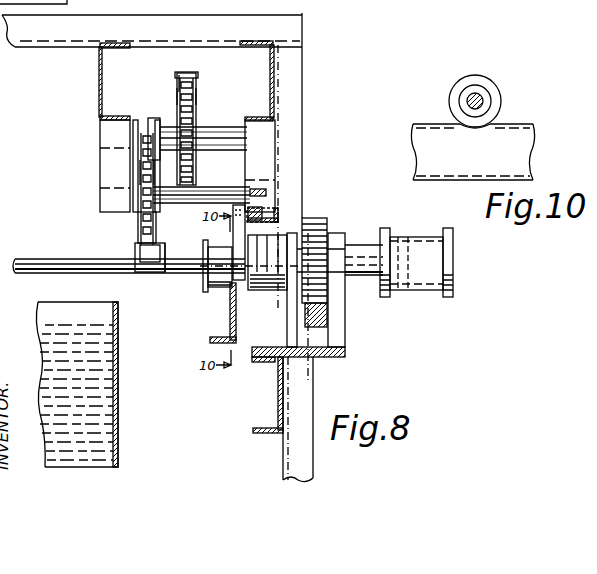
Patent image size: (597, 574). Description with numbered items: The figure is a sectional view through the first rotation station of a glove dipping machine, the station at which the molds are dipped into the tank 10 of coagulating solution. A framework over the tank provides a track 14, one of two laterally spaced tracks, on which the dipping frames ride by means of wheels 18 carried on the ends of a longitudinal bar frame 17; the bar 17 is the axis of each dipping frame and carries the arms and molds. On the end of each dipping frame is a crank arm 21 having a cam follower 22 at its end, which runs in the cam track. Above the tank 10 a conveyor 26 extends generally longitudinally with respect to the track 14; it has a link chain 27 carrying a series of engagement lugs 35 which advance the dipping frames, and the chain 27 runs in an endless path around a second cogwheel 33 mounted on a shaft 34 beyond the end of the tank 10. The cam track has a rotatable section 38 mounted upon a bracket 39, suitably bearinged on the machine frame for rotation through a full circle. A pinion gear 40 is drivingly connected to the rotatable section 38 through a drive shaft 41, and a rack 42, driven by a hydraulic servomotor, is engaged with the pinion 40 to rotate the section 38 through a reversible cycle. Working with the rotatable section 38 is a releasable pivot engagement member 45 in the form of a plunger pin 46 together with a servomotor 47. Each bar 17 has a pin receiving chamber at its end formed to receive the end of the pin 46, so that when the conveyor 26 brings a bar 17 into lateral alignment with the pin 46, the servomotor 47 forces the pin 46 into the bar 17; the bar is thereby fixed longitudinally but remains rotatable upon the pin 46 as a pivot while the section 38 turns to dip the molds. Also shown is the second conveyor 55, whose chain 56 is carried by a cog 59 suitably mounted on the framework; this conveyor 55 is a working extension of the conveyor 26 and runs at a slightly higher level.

In FIG. 8, the tank 10 is at (119, 355).
In FIG. 8, the track 14 is at (218, 288).
In FIG. 10, the track 14 is at (518, 122).
In FIG. 8, the longitudinal bar frame 17 is at (87, 261).
In FIG. 8, the wheel 18 is at (214, 244).
In FIG. 10, the wheel 18 is at (498, 93).
In FIG. 8, the crank arm 21 is at (240, 235).
In FIG. 8, the cam follower 22 is at (262, 214).
In FIG. 8, the conveyor 26 is at (142, 222).
In FIG. 8, the link chain 27 is at (148, 132).
In FIG. 8, the second cogwheel 33 is at (142, 173).
In FIG. 8, the shaft 34 is at (172, 212).
In FIG. 8, the engagement lug 35 is at (150, 270).
In FIG. 8, the rotatable section 38 is at (266, 194).
In FIG. 8, the bracket 39 is at (270, 292).
In FIG. 8, the pinion gear 40 is at (323, 230).
In FIG. 8, the drive shaft 41 is at (356, 278).
In FIG. 8, the rack 42 is at (327, 318).
In FIG. 8, the releasable pivot engagement member 45 is at (363, 248).
In FIG. 8, the plunger pin 46 is at (222, 262).
In FIG. 10, the plunger pin 46 is at (477, 99).
In FIG. 8, the servomotor 47 is at (416, 291).
In FIG. 8, the conveyor 55 is at (190, 78).
In FIG. 8, the chain 56 is at (196, 98).
In FIG. 8, the cog 59 is at (178, 90).